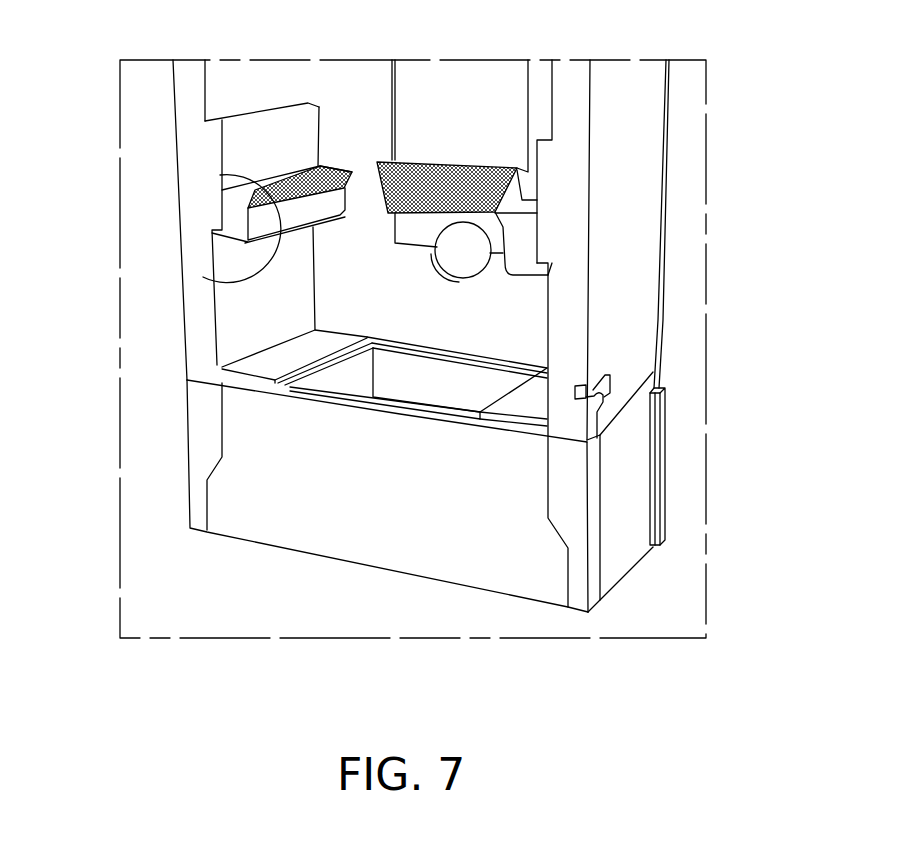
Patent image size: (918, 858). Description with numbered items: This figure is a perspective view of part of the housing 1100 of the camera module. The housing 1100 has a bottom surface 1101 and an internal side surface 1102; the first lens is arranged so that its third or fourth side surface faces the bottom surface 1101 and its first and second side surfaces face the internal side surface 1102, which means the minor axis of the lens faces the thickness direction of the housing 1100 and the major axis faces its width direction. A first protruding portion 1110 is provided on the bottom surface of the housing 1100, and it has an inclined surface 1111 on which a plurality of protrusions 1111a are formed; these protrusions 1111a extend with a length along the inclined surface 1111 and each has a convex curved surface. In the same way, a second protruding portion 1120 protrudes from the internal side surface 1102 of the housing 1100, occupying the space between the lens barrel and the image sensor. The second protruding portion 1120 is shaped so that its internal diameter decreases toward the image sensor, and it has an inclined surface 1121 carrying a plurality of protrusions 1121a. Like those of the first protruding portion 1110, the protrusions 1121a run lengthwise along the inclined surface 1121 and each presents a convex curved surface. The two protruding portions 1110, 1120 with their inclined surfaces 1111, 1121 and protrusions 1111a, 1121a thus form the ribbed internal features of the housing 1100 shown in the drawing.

The housing 1100 is at (633, 248).
The bottom surface 1101 is at (345, 97).
The internal side surface 1102 is at (247, 337).
The first protruding portion 1110 is at (467, 168).
The inclined surface 1111 is at (522, 186).
The protrusions 1111a is at (497, 185).
The second protruding portion 1120 is at (257, 182).
The inclined surface 1121 is at (250, 197).
The protrusions 1121a is at (210, 282).